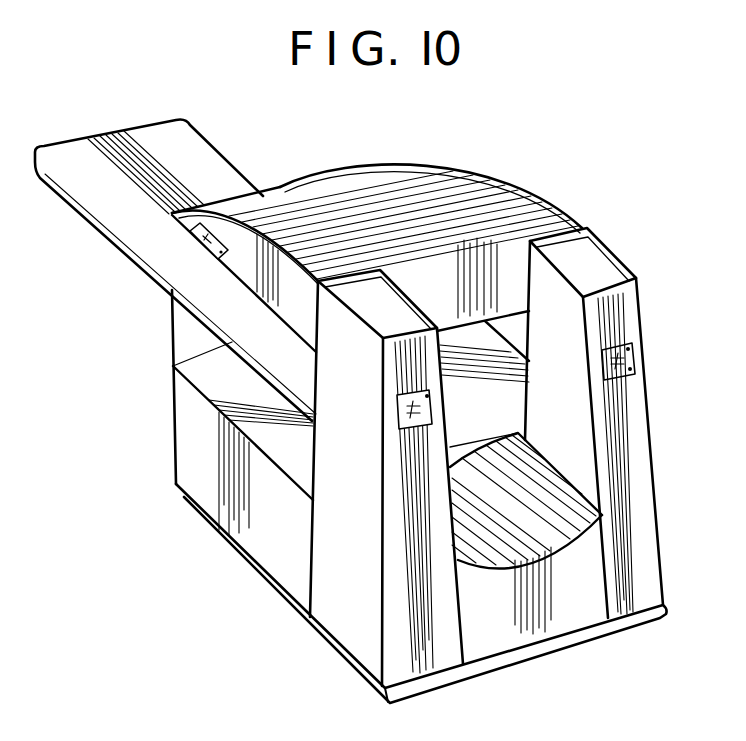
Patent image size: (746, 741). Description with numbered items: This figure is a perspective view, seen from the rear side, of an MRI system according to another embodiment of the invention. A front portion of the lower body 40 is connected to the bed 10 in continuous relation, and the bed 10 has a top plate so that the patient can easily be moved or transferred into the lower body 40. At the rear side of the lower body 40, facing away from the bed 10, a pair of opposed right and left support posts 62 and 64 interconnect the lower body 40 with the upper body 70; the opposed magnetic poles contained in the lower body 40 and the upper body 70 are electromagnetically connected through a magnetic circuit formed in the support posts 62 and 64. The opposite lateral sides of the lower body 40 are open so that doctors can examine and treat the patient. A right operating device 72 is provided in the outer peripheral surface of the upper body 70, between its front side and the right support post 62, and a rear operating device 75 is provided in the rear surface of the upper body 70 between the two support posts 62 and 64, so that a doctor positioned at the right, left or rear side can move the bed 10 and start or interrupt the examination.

The bed 10 is at (213, 152).
The upper body 70 is at (493, 185).
The right operating device 72 is at (193, 237).
The lower body 40 is at (210, 379).
The rear operating device 75 is at (397, 410).
The left support post 64 is at (650, 493).
The right support post 62 is at (345, 605).